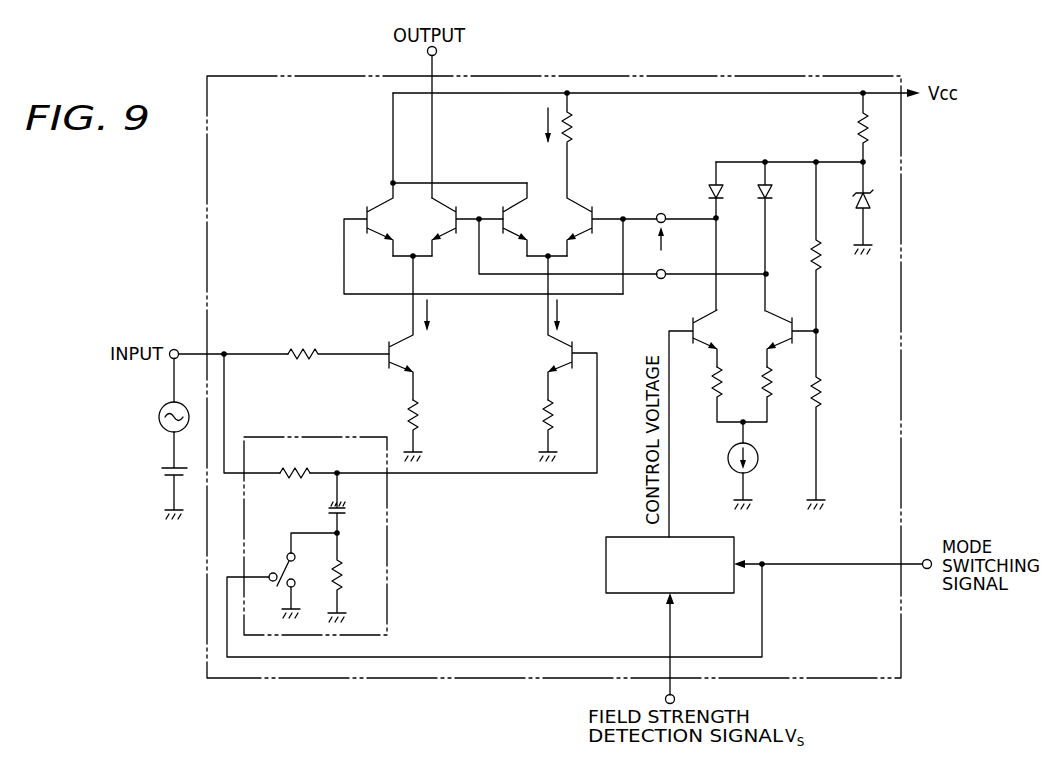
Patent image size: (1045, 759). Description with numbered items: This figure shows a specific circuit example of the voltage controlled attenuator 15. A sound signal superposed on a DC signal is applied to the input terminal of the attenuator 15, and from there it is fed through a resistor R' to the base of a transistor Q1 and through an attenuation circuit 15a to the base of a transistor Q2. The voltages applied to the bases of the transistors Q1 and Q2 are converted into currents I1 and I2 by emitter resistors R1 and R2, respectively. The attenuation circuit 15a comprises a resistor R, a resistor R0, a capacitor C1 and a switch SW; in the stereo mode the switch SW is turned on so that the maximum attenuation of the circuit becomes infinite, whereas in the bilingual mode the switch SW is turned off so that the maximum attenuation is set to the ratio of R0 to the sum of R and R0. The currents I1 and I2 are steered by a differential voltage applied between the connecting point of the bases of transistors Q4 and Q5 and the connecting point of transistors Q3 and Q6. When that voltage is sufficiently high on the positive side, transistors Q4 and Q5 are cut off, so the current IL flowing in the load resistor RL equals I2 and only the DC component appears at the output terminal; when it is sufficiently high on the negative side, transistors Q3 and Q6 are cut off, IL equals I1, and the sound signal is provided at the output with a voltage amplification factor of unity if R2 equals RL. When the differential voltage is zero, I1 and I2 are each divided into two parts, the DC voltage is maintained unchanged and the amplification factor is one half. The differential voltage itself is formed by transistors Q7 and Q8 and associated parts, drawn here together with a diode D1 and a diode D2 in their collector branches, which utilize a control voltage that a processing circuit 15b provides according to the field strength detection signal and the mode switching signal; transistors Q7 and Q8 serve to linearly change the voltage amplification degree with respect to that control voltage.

The voltage controlled attenuator 15 is at (480, 680).
The attenuation circuit 15a is at (387, 623).
The processing circuit 15b is at (695, 593).
The transistor Q1 is at (405, 355).
The transistor Q2 is at (557, 353).
The transistor Q3 is at (376, 198).
The transistor Q4 is at (461, 236).
The transistor Q5 is at (517, 238).
The transistor Q6 is at (599, 238).
The transistor Q7 is at (710, 323).
The transistor Q8 is at (777, 320).
The resistor R' is at (337, 328).
The resistor R is at (300, 459).
The resistor R1 is at (420, 415).
The resistor R2 is at (545, 412).
The resistor R0 is at (341, 582).
The load resistor RL is at (574, 130).
The capacitor C1 is at (348, 509).
The diode D1 is at (723, 192).
The diode D2 is at (772, 192).
The switch SW is at (283, 568).
The current I1 is at (436, 315).
The current I2 is at (565, 315).
The current flowing in load resistor IL is at (535, 125).